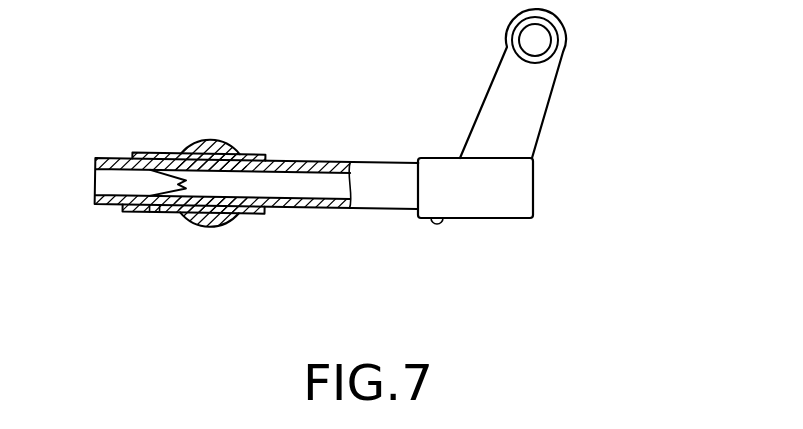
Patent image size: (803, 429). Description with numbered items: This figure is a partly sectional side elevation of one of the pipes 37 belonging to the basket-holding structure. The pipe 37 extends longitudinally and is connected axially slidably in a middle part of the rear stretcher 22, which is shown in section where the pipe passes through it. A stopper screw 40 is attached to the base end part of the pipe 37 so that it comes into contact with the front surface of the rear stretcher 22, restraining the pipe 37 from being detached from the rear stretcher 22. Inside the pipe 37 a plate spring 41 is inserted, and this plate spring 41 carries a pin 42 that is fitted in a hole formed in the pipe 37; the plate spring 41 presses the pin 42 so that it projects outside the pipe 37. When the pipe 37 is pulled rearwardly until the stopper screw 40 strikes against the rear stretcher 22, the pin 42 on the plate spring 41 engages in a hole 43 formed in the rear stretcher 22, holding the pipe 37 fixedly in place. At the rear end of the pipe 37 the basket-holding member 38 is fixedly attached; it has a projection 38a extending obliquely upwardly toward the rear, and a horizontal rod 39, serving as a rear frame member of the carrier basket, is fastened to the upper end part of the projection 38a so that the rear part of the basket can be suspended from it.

The rear stretcher 22 is at (222, 139).
The pipe 37 is at (315, 163).
The basket-holding member 38 is at (487, 200).
The projection 38a is at (525, 108).
The horizontal rod 39 is at (553, 45).
The stopper screw 40 is at (120, 212).
The plate spring 41 is at (185, 152).
The pin 42 is at (162, 214).
The hole 43 is at (153, 214).